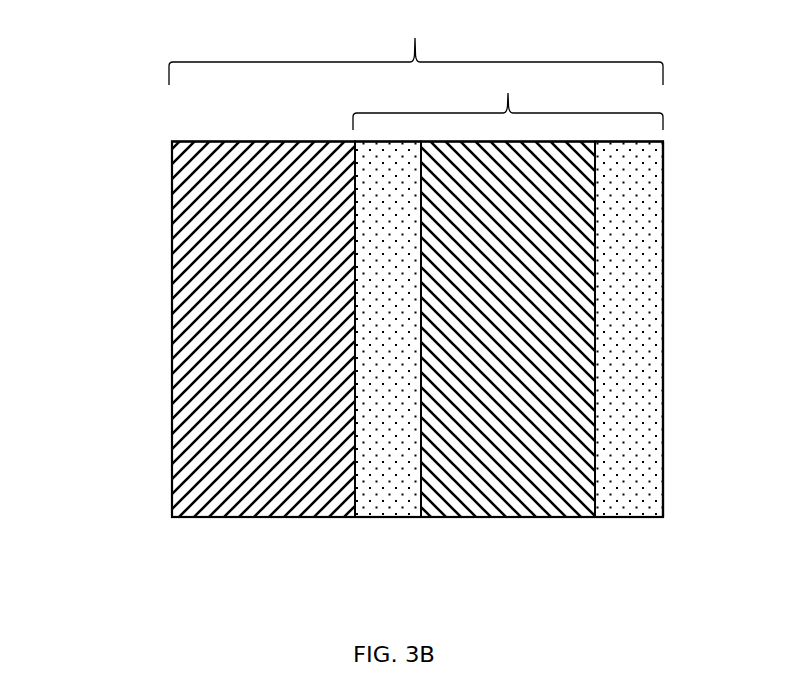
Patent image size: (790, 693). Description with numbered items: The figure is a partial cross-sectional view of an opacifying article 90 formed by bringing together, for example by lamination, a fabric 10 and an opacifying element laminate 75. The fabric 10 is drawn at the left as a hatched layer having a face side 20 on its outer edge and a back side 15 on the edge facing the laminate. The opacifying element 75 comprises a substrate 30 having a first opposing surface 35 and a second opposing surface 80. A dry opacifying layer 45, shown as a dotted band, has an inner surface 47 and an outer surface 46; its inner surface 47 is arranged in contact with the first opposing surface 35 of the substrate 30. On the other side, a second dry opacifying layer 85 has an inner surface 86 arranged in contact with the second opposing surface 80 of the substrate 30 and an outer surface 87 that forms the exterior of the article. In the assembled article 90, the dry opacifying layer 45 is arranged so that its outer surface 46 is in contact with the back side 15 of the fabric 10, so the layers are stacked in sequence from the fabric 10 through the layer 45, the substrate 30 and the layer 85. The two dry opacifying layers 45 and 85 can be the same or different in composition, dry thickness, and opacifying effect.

The fabric 10 is at (146, 132).
The face side 20 is at (172, 266).
The dry opacifying layer 45 is at (372, 505).
The substrate 30 is at (577, 490).
The second dry opacifying layer 85 is at (640, 383).
The opacifying article 90 is at (416, 53).
The opacifying element 75 is at (508, 103).
The back side 15 is at (345, 486).
The outer surface 46 is at (354, 453).
The inner surface 47 is at (420, 476).
The first opposing surface 35 is at (423, 433).
The second opposing surface 80 is at (587, 210).
The inner surface 86 is at (598, 465).
The outer surface 87 is at (665, 411).